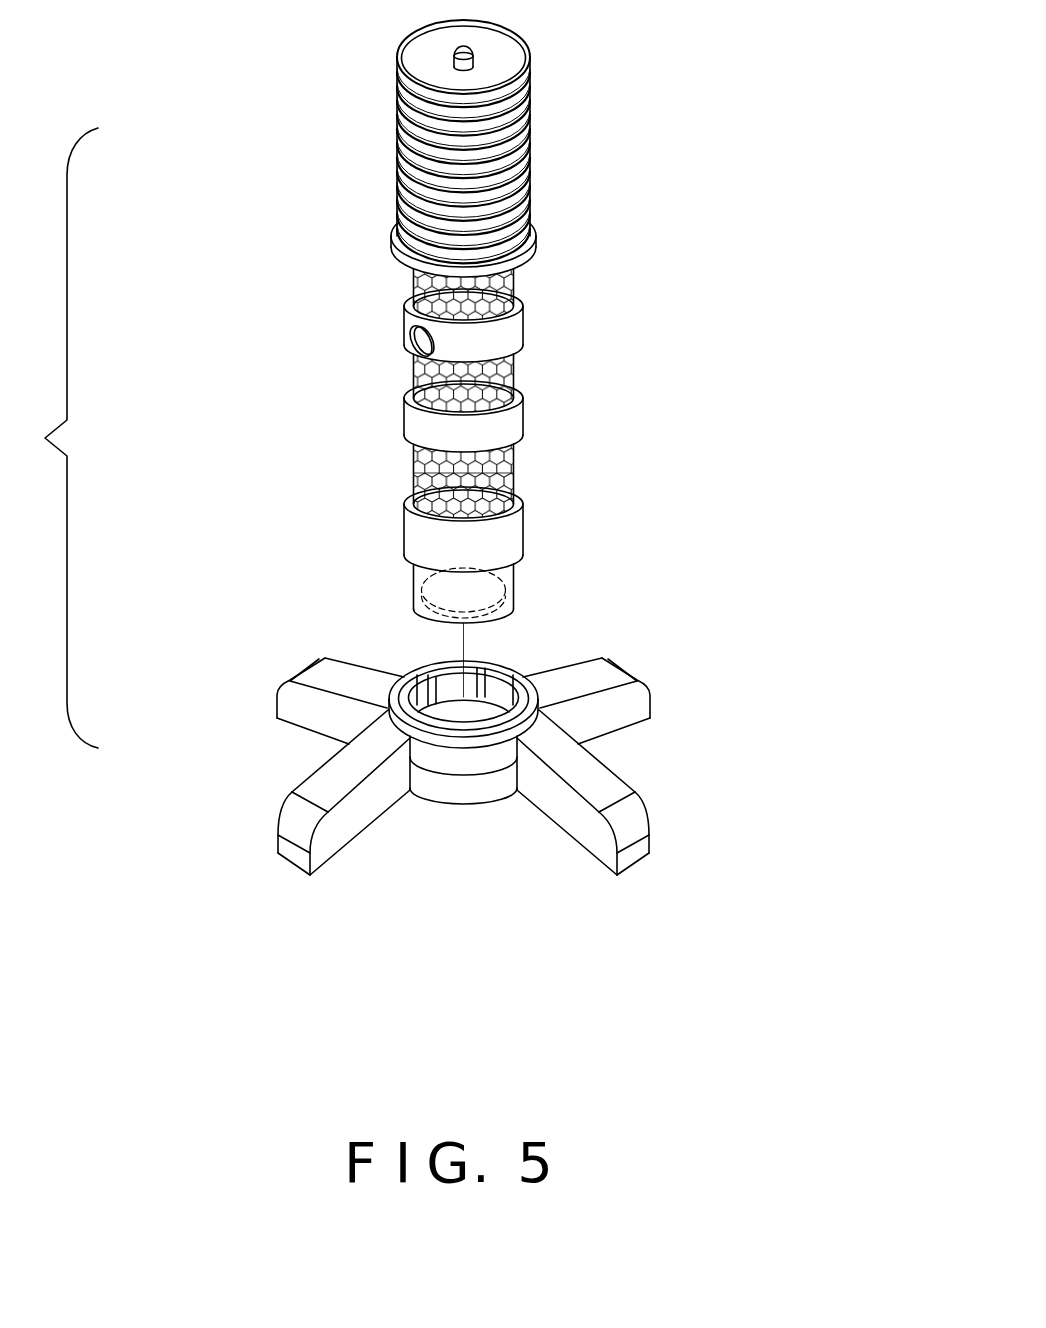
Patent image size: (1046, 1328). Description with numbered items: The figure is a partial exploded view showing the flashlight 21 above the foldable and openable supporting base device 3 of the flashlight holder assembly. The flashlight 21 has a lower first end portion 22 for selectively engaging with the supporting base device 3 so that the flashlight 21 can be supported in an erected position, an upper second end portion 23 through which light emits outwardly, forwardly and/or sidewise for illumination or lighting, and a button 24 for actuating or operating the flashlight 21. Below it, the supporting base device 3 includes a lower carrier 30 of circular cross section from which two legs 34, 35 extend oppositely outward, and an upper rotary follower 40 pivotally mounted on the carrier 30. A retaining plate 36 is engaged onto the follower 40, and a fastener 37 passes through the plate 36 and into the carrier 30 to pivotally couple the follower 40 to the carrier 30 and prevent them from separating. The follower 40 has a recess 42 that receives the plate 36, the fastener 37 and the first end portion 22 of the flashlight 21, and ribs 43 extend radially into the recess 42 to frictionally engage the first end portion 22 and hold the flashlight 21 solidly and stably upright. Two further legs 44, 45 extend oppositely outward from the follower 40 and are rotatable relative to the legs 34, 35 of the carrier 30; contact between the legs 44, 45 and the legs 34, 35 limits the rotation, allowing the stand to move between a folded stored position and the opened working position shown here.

The supporting base device 3 is at (662, 608).
The flashlight 21 is at (510, 338).
The first end portion 22 is at (508, 590).
The second end portion 23 is at (510, 138).
The button 24 is at (413, 339).
The carrier 30 is at (470, 795).
The leg 34 is at (322, 677).
The leg 35 is at (635, 820).
The plate 36 is at (515, 692).
The fastener 37 is at (463, 725).
The follower 40 is at (528, 680).
The recess 42 is at (418, 688).
The rib 43 is at (490, 712).
The leg 44 is at (607, 673).
The leg 45 is at (292, 817).